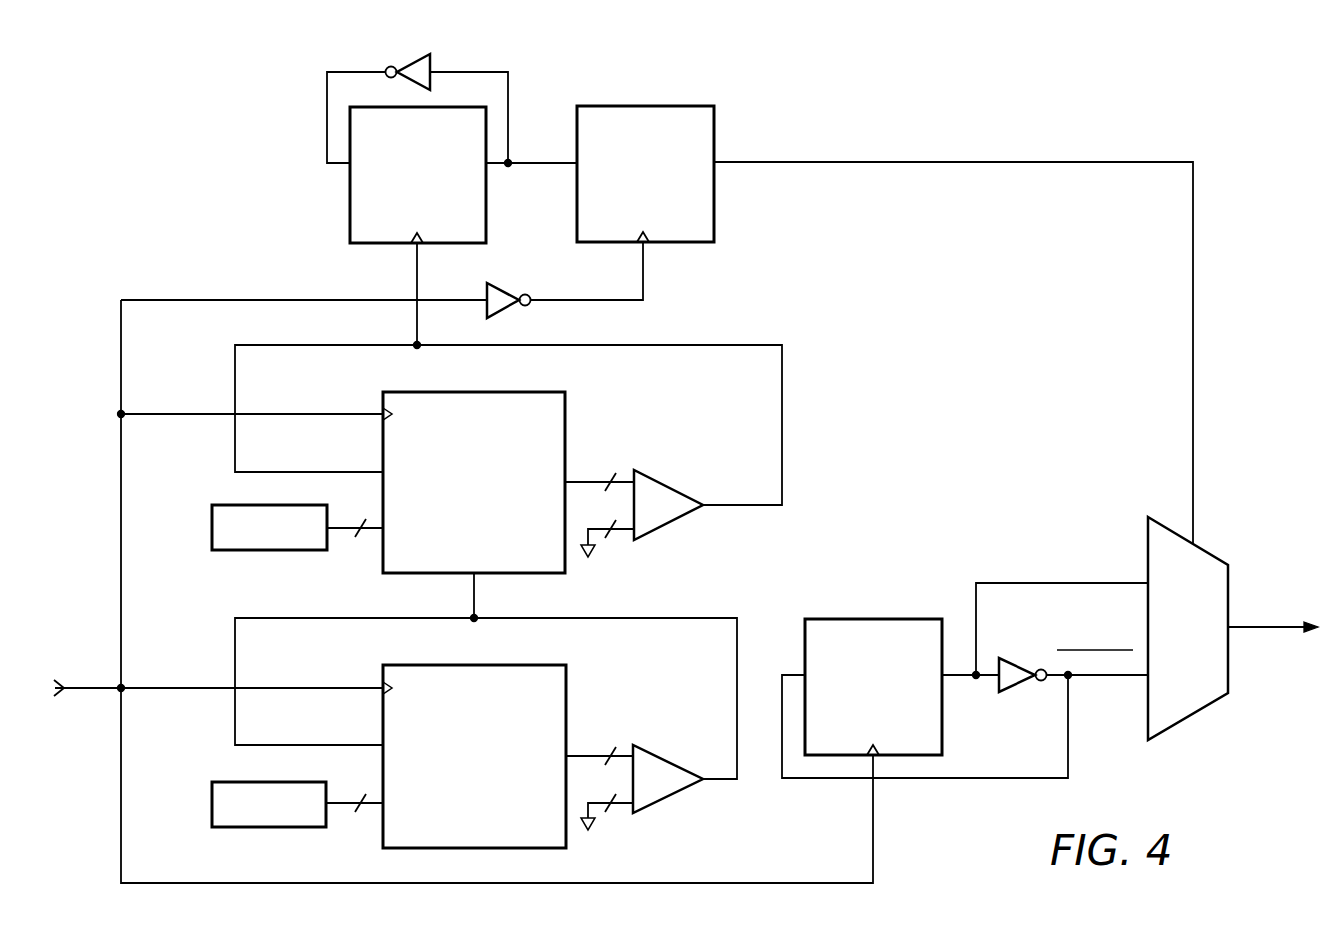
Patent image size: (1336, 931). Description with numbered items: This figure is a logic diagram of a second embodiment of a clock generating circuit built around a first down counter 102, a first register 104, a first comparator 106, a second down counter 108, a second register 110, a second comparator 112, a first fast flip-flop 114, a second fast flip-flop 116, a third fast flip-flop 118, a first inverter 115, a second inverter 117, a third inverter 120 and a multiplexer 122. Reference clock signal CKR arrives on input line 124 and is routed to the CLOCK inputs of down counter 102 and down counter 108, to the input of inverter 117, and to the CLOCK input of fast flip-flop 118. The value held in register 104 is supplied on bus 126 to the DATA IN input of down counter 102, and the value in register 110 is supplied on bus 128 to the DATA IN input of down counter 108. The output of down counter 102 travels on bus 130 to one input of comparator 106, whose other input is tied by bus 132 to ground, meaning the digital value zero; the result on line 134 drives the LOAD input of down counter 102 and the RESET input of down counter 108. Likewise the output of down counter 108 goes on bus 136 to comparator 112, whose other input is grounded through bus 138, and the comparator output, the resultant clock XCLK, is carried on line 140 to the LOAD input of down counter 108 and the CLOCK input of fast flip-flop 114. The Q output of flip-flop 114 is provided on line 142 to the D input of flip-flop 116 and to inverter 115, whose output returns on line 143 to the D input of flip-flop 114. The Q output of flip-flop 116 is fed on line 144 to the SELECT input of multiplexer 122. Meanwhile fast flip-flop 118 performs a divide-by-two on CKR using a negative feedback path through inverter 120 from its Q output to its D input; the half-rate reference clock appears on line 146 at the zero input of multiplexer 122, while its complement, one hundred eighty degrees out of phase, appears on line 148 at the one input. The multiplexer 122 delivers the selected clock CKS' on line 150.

The first down counter 102 is at (566, 686).
The first register 104 is at (212, 803).
The first comparator 106 is at (668, 760).
The second down counter 108 is at (565, 412).
The second register 110 is at (212, 528).
The second comparator 112 is at (665, 485).
The first fast flip-flop 114 is at (350, 205).
The first inverter 115 is at (410, 62).
The second fast flip-flop 116 is at (643, 106).
The second inverter 117 is at (505, 288).
The third fast flip-flop 118 is at (872, 618).
The third inverter 120 is at (1015, 662).
The multiplexer 122 is at (1215, 556).
The input line 124 is at (88, 700).
The bus 126 is at (350, 812).
The bus 128 is at (350, 535).
The bus 130 is at (590, 752).
The bus 132 is at (620, 812).
The line 134 is at (724, 780).
The bus 136 is at (590, 478).
The bus 138 is at (620, 540).
The line 140 is at (782, 426).
The line 142 is at (528, 160).
The line 143 is at (327, 118).
The line 144 is at (915, 161).
The line 146 is at (958, 677).
The line 148 is at (955, 779).
The line 150 is at (1245, 630).